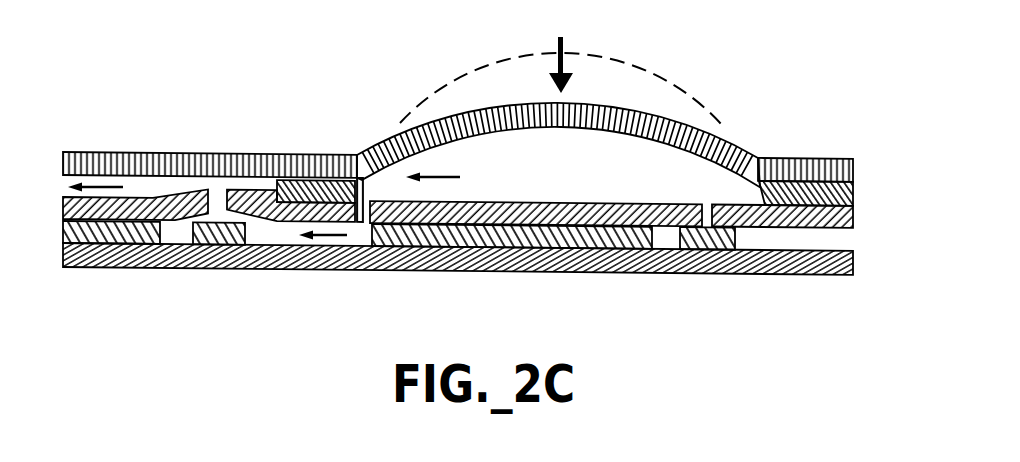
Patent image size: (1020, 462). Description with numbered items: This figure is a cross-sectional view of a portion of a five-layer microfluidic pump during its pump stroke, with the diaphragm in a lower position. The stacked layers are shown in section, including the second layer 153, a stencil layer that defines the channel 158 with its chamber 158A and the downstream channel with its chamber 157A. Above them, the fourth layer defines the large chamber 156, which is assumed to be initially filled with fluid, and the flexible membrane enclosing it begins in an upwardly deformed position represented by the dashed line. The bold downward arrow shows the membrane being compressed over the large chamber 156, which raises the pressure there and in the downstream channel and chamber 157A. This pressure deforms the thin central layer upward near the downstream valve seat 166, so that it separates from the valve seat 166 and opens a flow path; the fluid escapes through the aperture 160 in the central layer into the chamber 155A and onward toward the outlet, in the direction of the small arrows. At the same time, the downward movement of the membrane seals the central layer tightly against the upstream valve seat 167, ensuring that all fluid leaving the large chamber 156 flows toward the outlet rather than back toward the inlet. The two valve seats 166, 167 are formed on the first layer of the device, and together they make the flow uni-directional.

The second layer 153 is at (242, 200).
The chamber 155A is at (142, 188).
The large chamber 156 is at (487, 153).
The chamber 157A is at (263, 233).
The channel 158 is at (840, 240).
The chamber 158A is at (757, 243).
The aperture 160 is at (214, 190).
The downstream valve seat 166 is at (190, 232).
The upstream valve seat 167 is at (680, 240).